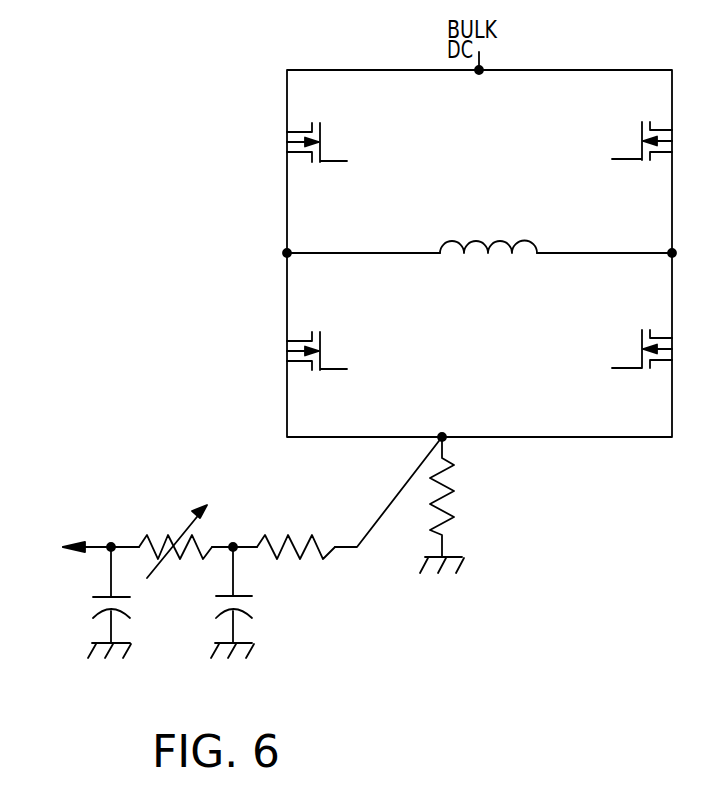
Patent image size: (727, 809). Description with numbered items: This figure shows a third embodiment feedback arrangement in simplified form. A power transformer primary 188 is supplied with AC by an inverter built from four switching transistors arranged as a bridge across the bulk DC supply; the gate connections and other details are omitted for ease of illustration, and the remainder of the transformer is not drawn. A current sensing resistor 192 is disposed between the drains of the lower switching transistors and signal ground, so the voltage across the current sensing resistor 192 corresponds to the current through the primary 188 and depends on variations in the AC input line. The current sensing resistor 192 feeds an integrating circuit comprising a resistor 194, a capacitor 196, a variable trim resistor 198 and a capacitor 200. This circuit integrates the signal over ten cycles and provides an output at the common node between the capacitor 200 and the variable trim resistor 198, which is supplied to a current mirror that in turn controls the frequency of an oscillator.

The power transformer primary 188 is at (460, 243).
The current sensing resistor 192 is at (452, 488).
The resistor 194 is at (310, 533).
The capacitor 196 is at (237, 616).
The variable trim resistor 198 is at (160, 534).
The capacitor 200 is at (107, 613).